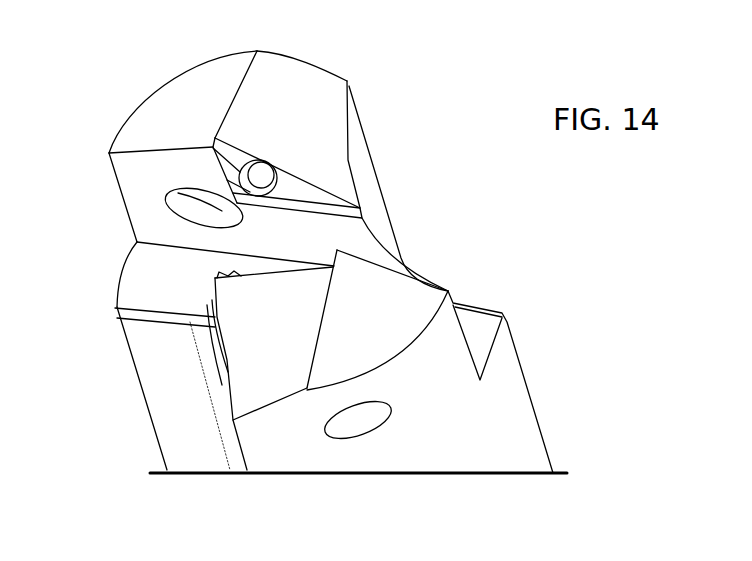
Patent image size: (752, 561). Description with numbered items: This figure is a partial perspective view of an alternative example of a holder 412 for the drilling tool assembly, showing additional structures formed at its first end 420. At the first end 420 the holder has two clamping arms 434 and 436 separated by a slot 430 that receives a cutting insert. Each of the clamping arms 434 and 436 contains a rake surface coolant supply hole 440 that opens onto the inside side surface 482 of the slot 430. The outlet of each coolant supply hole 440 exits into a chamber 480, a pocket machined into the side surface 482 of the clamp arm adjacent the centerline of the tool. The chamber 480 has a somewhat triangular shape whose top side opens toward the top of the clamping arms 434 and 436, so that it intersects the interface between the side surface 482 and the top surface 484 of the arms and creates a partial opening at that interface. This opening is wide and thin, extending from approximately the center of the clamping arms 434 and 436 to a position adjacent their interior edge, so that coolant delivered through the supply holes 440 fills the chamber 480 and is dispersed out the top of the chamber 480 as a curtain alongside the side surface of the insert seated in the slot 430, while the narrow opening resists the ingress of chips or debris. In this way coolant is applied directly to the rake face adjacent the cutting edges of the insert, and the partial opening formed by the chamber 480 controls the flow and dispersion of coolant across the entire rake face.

The holder 412 is at (124, 360).
The first end 420 is at (339, 73).
The slot 430 is at (470, 332).
The clamping arm 434 is at (175, 85).
The clamping arm 436 is at (408, 302).
The rake surface coolant supply hole 440 is at (267, 177).
The chamber 480 is at (316, 208).
The side surface 482 is at (128, 177).
The top surface 484 is at (263, 360).